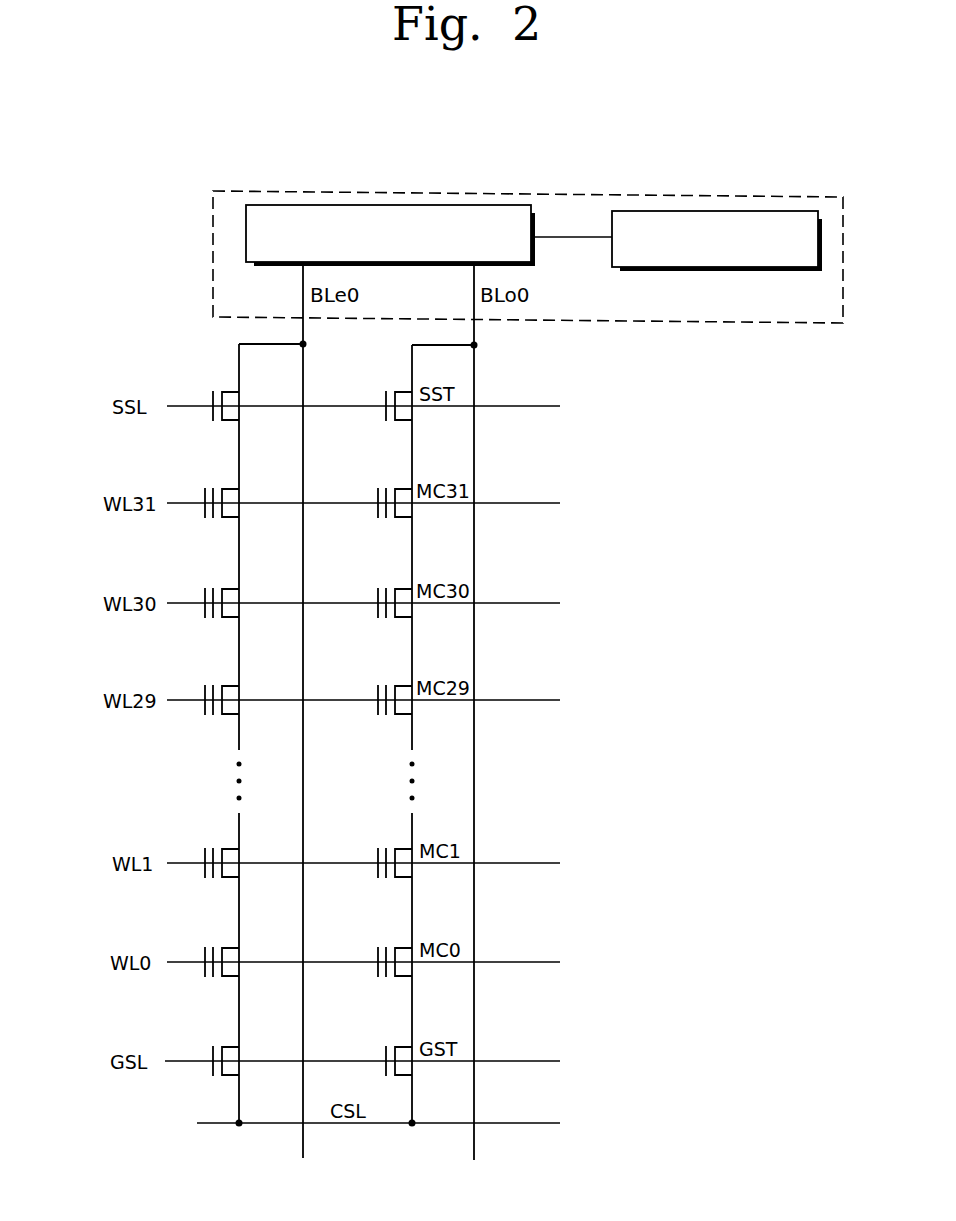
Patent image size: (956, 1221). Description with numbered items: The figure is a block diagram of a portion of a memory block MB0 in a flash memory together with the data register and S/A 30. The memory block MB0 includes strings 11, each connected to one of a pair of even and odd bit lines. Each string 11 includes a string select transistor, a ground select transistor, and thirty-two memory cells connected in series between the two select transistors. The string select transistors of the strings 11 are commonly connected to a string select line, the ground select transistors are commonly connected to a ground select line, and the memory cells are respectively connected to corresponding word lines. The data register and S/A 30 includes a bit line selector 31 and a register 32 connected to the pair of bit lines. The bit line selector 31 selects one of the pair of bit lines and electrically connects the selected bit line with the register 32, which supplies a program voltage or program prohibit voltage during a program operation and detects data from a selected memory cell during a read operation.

The string 11 is at (206, 386).
The data register and S/A 30 is at (778, 196).
The bit line selector 31 is at (489, 205).
The register 32 is at (678, 211).
The memory block MB0 is at (94, 383).